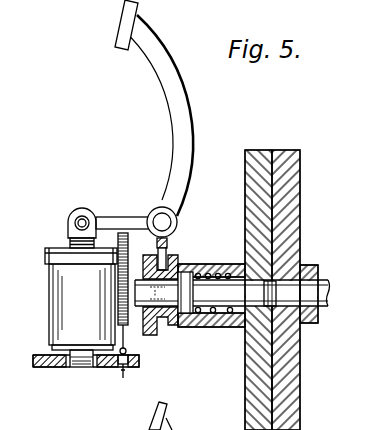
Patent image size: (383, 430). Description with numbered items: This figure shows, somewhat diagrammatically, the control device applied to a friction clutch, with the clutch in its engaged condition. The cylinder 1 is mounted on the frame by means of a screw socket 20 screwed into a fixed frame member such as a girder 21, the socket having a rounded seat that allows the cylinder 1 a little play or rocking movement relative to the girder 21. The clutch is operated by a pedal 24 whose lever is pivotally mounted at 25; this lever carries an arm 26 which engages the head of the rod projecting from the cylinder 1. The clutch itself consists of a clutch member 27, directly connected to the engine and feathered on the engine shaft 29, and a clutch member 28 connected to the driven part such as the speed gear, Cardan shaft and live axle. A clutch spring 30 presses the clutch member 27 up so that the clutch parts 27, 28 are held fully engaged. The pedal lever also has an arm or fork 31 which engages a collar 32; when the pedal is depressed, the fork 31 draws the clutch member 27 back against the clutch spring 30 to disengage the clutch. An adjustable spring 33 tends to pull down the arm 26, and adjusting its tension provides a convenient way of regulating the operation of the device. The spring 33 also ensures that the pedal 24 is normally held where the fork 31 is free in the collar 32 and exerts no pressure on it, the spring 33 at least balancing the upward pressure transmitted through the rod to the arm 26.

The cylinder 1 is at (83, 313).
The screw socket 20 is at (82, 368).
The girder 21 is at (47, 368).
The pedal 24 is at (117, 40).
The pivot 25 is at (148, 212).
The arm 26 is at (108, 217).
The clutch member 27 is at (265, 165).
The clutch member 28 is at (283, 188).
The engine shaft 29 is at (217, 292).
The clutch spring 30 is at (215, 272).
The arm or fork 31 is at (166, 256).
The collar 32 is at (167, 333).
The adjustable spring 33 is at (118, 285).